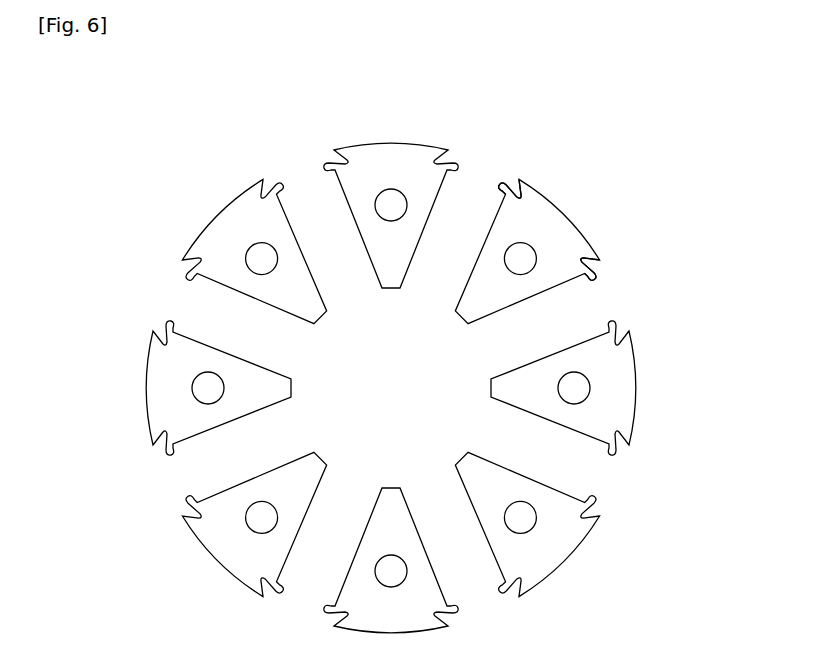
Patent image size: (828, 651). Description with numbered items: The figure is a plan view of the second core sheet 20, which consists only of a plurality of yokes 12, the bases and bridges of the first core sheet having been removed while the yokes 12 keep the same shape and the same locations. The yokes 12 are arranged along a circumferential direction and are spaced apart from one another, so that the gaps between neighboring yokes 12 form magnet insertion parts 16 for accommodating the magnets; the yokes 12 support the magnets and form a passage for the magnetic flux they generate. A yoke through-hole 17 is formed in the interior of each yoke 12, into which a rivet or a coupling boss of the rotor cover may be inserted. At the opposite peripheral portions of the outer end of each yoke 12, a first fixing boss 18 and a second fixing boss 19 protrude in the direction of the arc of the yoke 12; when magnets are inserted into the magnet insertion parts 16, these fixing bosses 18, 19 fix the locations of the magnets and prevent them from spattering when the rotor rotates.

The yoke 12 is at (555, 222).
The magnet insertion part 16 is at (331, 228).
The yoke through-hole 17 is at (578, 385).
The first fixing boss 18 is at (602, 268).
The second fixing boss 19 is at (500, 185).
The second core sheet 20 is at (198, 200).